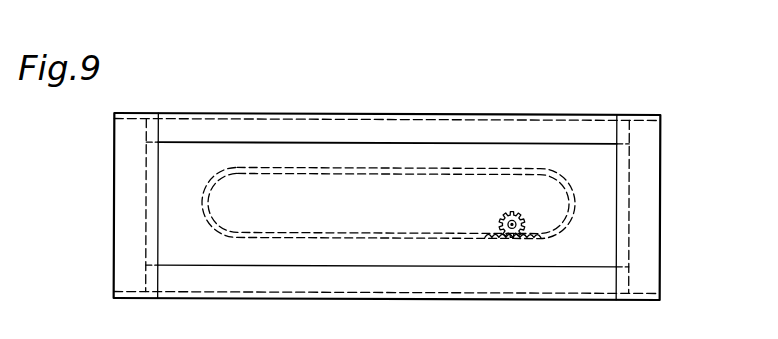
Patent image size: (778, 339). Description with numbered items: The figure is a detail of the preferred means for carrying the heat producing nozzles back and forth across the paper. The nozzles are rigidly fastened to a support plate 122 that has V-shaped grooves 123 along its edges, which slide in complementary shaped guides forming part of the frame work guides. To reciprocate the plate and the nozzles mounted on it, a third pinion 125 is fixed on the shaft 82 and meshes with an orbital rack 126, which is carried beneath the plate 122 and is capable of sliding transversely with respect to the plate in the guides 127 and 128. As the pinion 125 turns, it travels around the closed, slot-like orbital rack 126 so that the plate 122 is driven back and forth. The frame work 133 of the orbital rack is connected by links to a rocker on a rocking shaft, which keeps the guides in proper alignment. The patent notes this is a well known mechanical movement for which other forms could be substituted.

The support plate 122 is at (122, 282).
The V-shaped grooves 123 is at (212, 114).
The third pinion 125 is at (526, 222).
The orbital rack 126 is at (317, 236).
The guide 127 is at (155, 207).
The guide 128 is at (620, 255).
The frame work of the orbital rack 133 is at (177, 156).
The shaft 82 is at (506, 219).